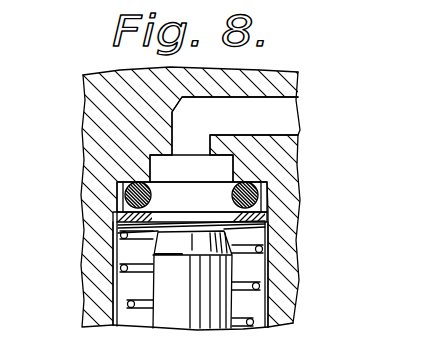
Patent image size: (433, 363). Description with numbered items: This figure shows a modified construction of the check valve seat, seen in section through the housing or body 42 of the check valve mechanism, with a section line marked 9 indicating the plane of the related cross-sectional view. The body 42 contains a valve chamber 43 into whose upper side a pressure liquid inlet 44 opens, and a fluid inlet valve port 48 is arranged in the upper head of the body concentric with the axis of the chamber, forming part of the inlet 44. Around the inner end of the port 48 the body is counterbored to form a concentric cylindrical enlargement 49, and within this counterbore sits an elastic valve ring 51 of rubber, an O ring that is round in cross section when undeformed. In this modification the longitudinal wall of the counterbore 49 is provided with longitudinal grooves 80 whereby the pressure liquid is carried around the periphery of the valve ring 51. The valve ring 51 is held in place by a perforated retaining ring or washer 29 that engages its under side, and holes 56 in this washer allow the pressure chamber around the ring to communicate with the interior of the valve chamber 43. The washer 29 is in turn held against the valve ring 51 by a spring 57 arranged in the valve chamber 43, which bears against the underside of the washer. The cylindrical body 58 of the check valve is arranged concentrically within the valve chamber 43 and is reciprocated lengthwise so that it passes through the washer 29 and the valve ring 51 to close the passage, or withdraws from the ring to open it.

The housing or body of the check valve mechanism 42 is at (85, 81).
The pressure liquid inlet 44 is at (235, 126).
The fluid inlet valve port 48 is at (191, 168).
The retaining ring or washer 29 is at (152, 212).
The concentric cylindrical enlargement of the port 49 is at (265, 205).
The elastic valve ring 51 is at (120, 176).
The longitudinal grooves 80 is at (270, 210).
The holes 56 is at (115, 216).
The valve chamber 43 is at (262, 270).
The cylindrical body of a check valve 58 is at (188, 322).
The spring 57 is at (250, 325).
The section line 9- 9 is at (100, 197).